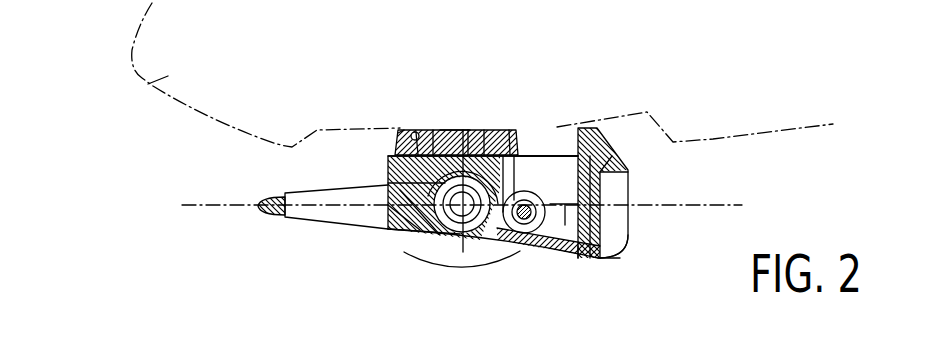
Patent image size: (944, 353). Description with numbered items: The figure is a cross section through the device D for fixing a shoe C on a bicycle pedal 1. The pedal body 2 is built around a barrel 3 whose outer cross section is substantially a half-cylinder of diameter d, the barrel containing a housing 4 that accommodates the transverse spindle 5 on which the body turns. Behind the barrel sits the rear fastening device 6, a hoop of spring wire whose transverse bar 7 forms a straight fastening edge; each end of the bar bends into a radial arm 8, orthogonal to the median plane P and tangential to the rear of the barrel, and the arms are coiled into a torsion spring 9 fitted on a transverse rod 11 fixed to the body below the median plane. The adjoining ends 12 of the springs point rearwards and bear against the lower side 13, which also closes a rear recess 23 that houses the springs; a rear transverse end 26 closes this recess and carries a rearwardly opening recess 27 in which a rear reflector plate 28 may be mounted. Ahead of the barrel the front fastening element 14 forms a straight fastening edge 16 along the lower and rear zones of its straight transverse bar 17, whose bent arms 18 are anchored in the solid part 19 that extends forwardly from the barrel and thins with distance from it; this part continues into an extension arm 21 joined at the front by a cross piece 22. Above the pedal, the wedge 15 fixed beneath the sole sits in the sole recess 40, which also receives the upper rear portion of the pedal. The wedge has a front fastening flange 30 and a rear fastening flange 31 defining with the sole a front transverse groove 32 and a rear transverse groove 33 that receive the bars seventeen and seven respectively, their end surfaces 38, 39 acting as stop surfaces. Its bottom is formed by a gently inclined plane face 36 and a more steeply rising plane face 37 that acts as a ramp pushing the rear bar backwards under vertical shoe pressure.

The bicycle pedal 1 is at (418, 250).
The pedal body 2 is at (428, 258).
The barrel 3 is at (472, 253).
The housing 4 is at (451, 258).
The transverse spindle 5 is at (464, 252).
The fastening device 6 is at (540, 197).
The transverse bar 7 is at (521, 130).
The radial arm 8 is at (507, 180).
The torsion spring 9 is at (556, 200).
The transverse rod 11 is at (518, 258).
The adjoining ends of the torsion springs 12 is at (543, 262).
The lower side 13 is at (562, 256).
The front fastening element 14 is at (415, 131).
The wedge 15 is at (468, 130).
The straight fastening edge 16 is at (433, 130).
The straight transverse bar 17 is at (417, 130).
The arm 18 is at (398, 161).
The solid part 19 is at (386, 240).
The extension arm 21 is at (310, 215).
The cross piece 22 is at (263, 212).
The recess 23 is at (587, 258).
The rear transverse end 26 is at (617, 157).
The rearwardly opening recess 27 is at (620, 192).
The rear reflector plate 28 is at (618, 250).
The front fastening flange 30 is at (398, 133).
The rear fastening flange 31 is at (528, 150).
The transverse groove 32 is at (408, 134).
The transverse groove 33 is at (509, 130).
The plane face 36 is at (385, 173).
The plane face 37 is at (545, 128).
The end surface 38 is at (453, 130).
The end surface 39 is at (484, 130).
The recess 40 is at (625, 126).
The shoe C is at (170, 75).
The device D is at (308, 165).
The median plane P is at (692, 207).
The diameter d is at (455, 252).